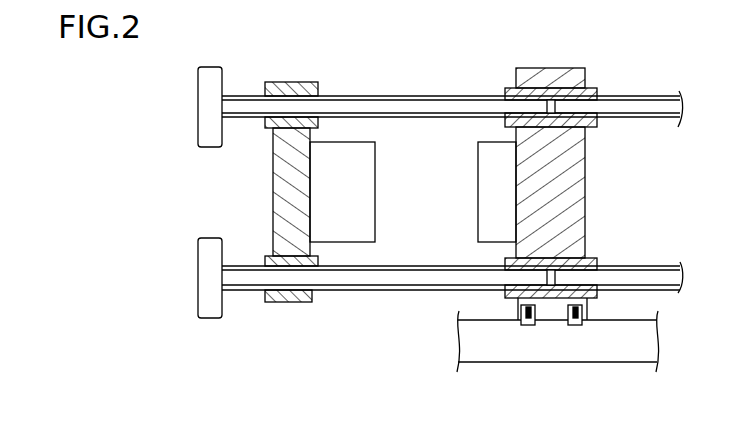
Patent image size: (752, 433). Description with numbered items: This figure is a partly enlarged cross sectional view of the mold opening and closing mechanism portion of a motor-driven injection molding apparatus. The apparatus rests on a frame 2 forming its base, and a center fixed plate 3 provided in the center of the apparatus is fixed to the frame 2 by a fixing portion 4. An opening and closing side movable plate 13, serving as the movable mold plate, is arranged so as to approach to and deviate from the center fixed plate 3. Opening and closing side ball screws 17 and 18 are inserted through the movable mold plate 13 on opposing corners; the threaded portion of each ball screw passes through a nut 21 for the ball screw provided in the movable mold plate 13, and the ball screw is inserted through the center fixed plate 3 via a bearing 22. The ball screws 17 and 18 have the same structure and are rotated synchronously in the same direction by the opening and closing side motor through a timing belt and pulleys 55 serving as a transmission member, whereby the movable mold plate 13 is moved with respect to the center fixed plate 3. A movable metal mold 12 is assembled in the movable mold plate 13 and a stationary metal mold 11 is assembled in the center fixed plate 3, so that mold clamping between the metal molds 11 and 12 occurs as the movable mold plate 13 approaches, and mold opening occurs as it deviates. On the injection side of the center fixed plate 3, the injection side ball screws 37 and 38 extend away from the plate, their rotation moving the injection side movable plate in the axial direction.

The frame 2 is at (573, 357).
The center fixed plate 3 is at (548, 78).
The fixing portion 4 is at (516, 321).
The stationary metal mold 11 is at (478, 185).
The movable metal mold 12 is at (375, 207).
The opening and closing side movable plate 13 is at (277, 167).
The opening and closing side ball screw 17 is at (377, 102).
The opening and closing side ball screw 18 is at (344, 284).
The nut 21 is at (317, 93).
The bearing 22 is at (505, 93).
The injection side ball screw 37 is at (648, 101).
The injection side ball screw 38 is at (670, 291).
The pulley 55 is at (198, 89).